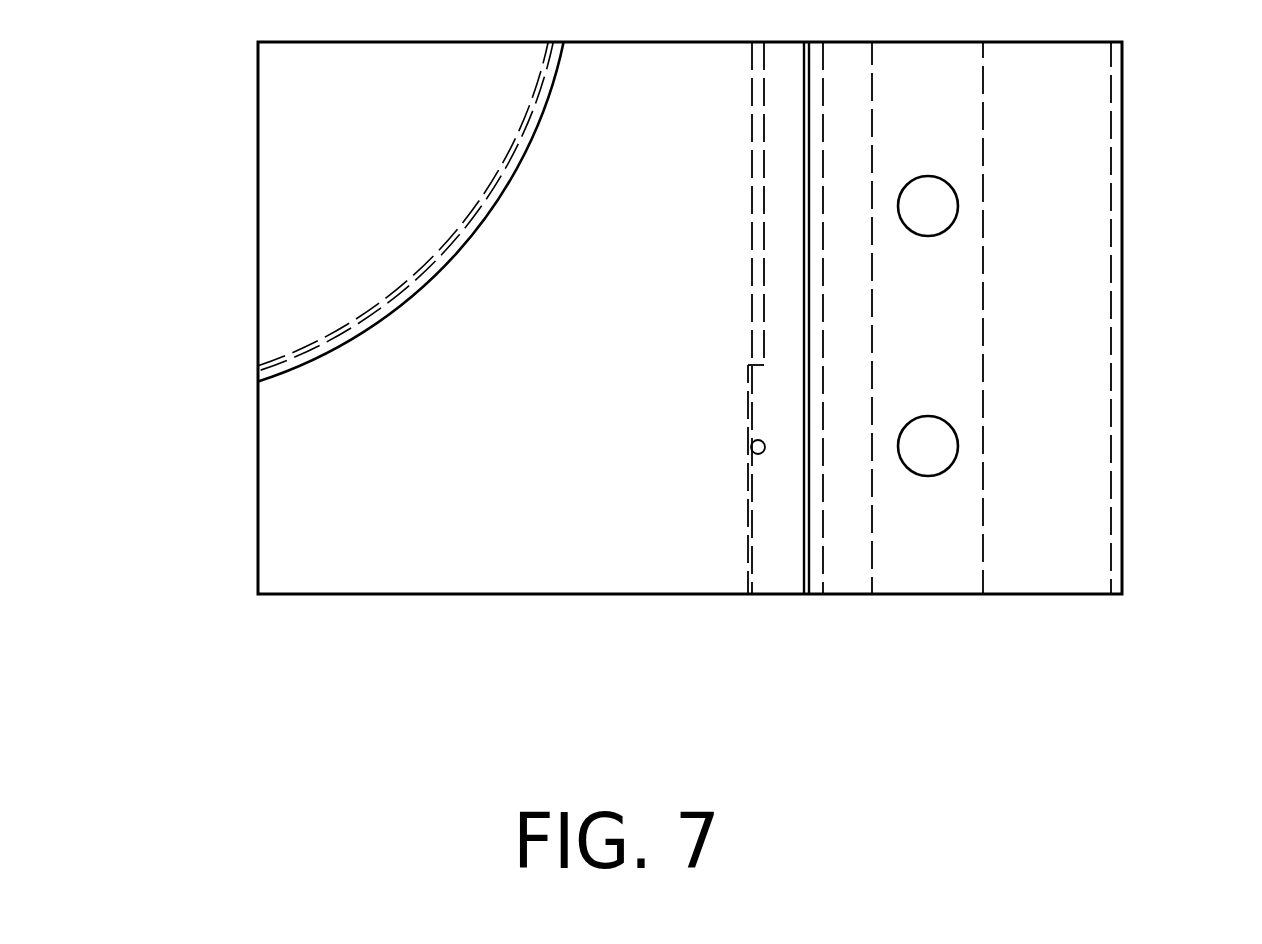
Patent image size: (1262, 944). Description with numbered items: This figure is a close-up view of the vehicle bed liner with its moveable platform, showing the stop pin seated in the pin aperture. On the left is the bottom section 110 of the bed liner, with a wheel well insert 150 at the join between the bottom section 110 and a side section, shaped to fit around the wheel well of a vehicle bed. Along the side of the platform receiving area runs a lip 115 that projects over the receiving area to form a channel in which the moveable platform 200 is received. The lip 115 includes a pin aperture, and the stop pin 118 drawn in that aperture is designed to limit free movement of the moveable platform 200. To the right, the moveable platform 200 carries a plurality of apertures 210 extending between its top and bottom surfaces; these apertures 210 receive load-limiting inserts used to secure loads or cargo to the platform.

The bottom section 110 is at (690, 396).
The lip 115 is at (805, 379).
The stop pin 118 is at (675, 588).
The wheel well insert 150 is at (366, 212).
The moveable platform 200 is at (1033, 318).
The apertures 210 is at (1009, 398).